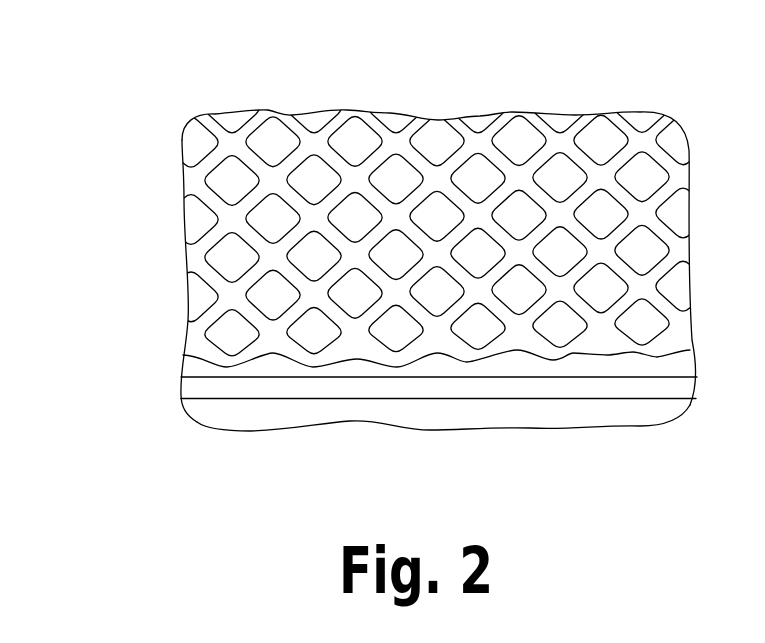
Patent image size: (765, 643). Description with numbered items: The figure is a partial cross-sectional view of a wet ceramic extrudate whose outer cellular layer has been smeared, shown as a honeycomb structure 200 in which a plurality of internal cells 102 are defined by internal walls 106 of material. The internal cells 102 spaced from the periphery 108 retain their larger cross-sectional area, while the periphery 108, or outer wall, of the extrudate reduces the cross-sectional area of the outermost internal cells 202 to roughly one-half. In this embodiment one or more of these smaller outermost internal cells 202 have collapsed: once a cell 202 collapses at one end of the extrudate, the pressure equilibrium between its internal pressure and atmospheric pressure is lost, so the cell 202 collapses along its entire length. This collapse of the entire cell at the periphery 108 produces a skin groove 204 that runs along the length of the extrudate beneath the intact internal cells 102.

The honeycomb structure 200 is at (93, 143).
The internal cells 102 is at (308, 330).
The internal walls 106 is at (208, 318).
The periphery 108 is at (357, 362).
The outermost internal cells 202 is at (515, 365).
The skin groove 204 is at (605, 365).